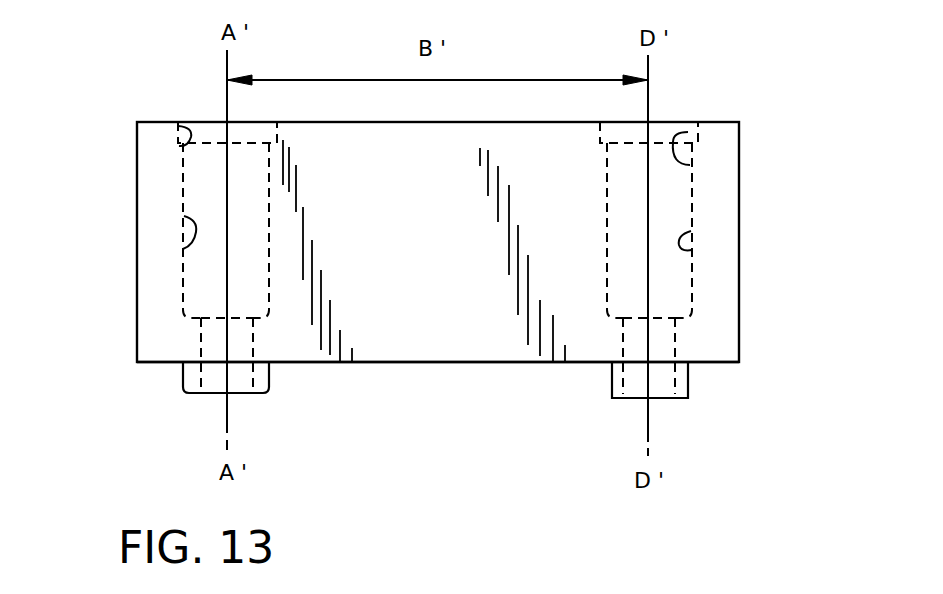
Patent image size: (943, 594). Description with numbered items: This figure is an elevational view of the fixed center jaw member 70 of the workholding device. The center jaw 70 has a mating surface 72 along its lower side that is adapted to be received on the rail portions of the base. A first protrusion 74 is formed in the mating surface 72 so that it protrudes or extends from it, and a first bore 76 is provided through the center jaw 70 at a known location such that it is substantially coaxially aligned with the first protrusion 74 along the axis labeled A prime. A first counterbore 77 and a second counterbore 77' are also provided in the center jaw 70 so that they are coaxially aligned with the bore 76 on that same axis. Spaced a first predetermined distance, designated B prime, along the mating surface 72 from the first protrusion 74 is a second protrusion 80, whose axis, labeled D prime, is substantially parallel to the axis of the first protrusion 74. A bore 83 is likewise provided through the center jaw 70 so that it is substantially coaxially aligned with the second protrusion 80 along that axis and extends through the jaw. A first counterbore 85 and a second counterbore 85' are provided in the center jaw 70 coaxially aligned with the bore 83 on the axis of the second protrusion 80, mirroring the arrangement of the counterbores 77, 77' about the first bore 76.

The center jaw member 70 is at (468, 220).
The mating surface 72 is at (710, 372).
The first protrusion 74 is at (185, 393).
The first bore 76 is at (233, 393).
The first counterbore 77 is at (154, 230).
The second counterbore 77' is at (155, 140).
The second protrusion 80 is at (688, 400).
The bore 83 is at (638, 388).
The first counterbore 85 is at (724, 230).
The second counterbore 85' is at (727, 143).